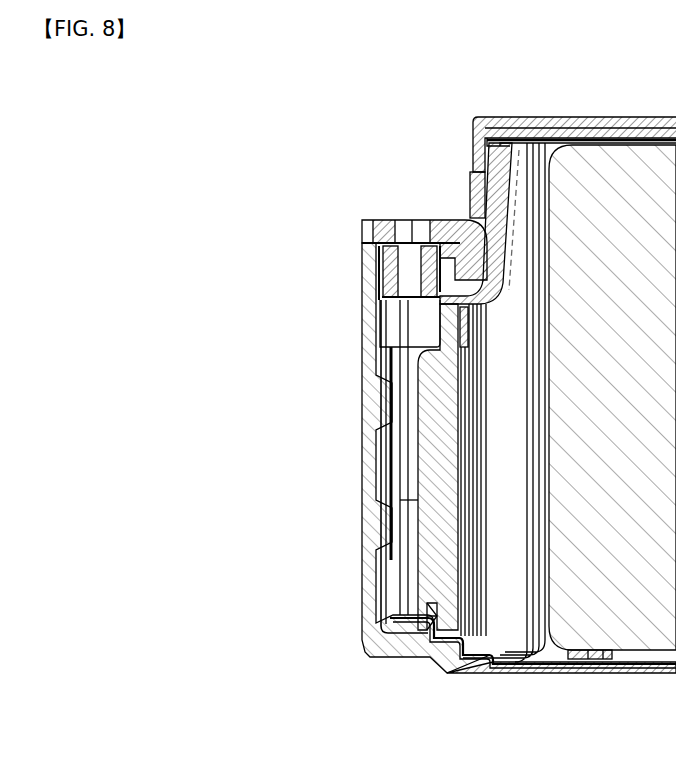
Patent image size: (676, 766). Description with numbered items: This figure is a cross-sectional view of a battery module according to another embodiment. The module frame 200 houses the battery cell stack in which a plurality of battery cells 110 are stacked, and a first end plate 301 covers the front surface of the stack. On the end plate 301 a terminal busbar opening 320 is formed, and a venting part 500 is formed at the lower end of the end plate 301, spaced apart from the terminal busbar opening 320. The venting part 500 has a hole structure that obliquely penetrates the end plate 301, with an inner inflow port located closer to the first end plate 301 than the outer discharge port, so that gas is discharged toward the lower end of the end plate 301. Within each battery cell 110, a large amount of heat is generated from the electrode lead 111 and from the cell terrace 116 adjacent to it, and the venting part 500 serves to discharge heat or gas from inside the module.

The module frame 200 is at (585, 117).
The terminal busbar opening 320 is at (473, 213).
The electrode lead 111 is at (473, 570).
The first end plate 301 is at (361, 605).
The venting part 500 is at (376, 577).
The cell terrace 116 is at (512, 636).
The battery cell 110 is at (627, 628).